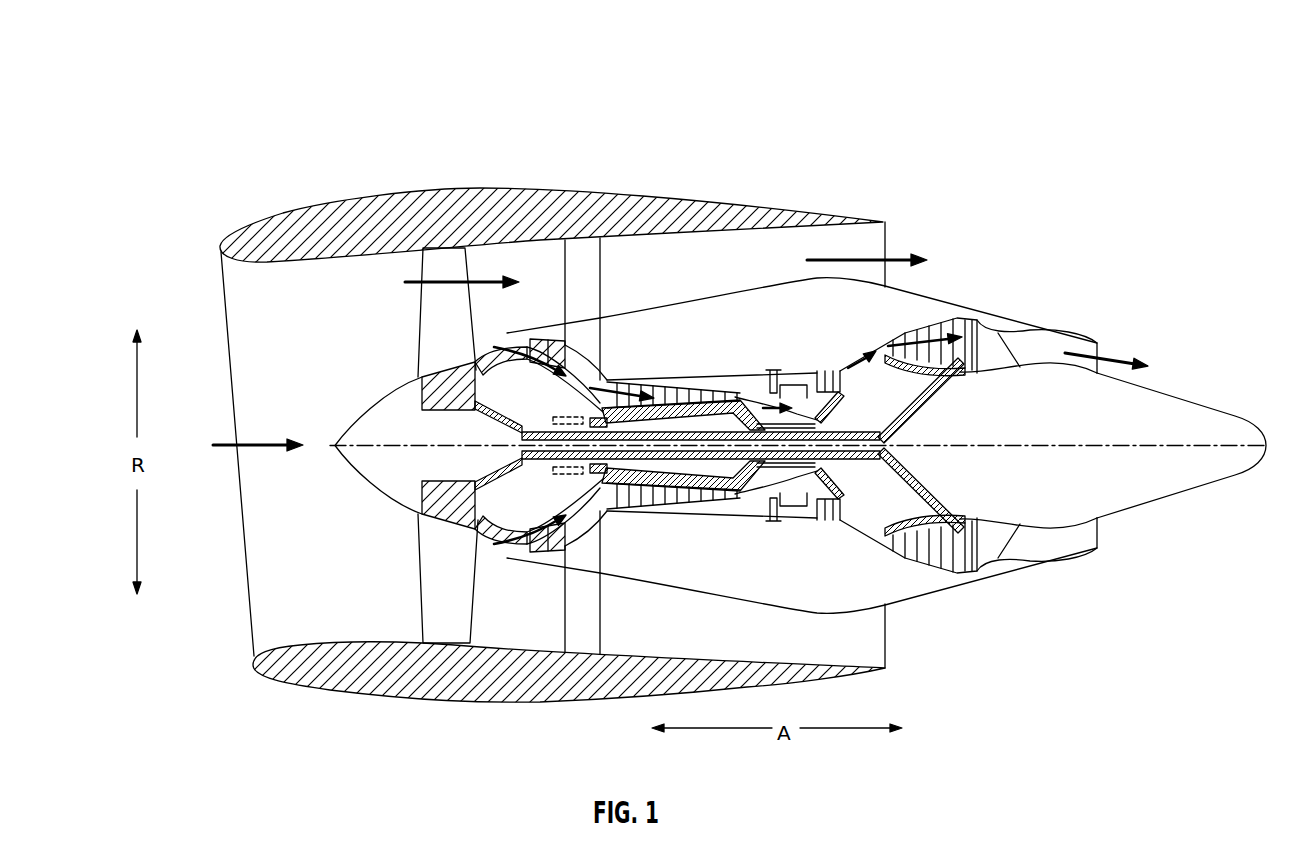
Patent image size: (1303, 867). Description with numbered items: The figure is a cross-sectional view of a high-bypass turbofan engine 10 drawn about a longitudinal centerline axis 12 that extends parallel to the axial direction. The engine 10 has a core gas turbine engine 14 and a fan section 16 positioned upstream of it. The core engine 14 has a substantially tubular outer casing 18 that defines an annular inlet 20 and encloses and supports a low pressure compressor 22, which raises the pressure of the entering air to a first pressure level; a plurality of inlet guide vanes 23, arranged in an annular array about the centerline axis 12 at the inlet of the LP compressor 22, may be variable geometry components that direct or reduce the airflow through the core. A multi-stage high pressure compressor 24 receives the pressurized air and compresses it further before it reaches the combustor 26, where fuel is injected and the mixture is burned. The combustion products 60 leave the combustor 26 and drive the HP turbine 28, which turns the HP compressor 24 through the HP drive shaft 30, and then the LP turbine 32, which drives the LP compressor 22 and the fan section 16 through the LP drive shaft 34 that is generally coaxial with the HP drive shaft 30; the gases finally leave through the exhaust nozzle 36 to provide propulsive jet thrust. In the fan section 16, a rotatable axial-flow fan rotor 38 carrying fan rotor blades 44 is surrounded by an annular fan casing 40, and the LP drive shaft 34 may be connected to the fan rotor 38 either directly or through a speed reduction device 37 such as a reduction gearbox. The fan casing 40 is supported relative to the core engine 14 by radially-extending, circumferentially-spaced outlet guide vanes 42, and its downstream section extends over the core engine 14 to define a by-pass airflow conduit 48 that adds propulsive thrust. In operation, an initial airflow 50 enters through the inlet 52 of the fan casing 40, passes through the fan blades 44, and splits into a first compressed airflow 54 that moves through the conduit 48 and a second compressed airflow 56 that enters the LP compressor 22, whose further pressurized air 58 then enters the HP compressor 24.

The turbofan engine 10 is at (1006, 163).
The centerline axis 12 is at (1041, 445).
The core gas turbine engine 14 is at (746, 346).
The fan section 16 is at (489, 173).
The outer casing 18 is at (747, 600).
The annular inlet 20 is at (507, 548).
The low pressure compressor 22 is at (556, 514).
The inlet guide vanes 23 is at (508, 558).
The high pressure compressor 24 is at (628, 500).
The combustor 26 is at (790, 505).
The HP turbine 28 is at (836, 510).
The HP drive shaft 30 is at (805, 410).
The LP turbine 32 is at (963, 572).
The LP drive shaft 34 is at (537, 421).
The exhaust nozzle 36 is at (1100, 353).
The speed reduction device 37 is at (569, 418).
The fan rotor 38 is at (475, 416).
The fan casing 40 is at (464, 703).
The outlet guide vanes 42 is at (588, 280).
The fan rotor blades 44 is at (418, 585).
The by-pass airflow conduit 48 is at (719, 285).
The initial airflow 50 is at (250, 444).
The inlet 52 is at (253, 650).
The first compressed airflow 54 is at (410, 281).
The second compressed airflow 56 is at (493, 345).
The airflow entering HP compressor 58 is at (610, 381).
The combustion products 60 is at (827, 373).